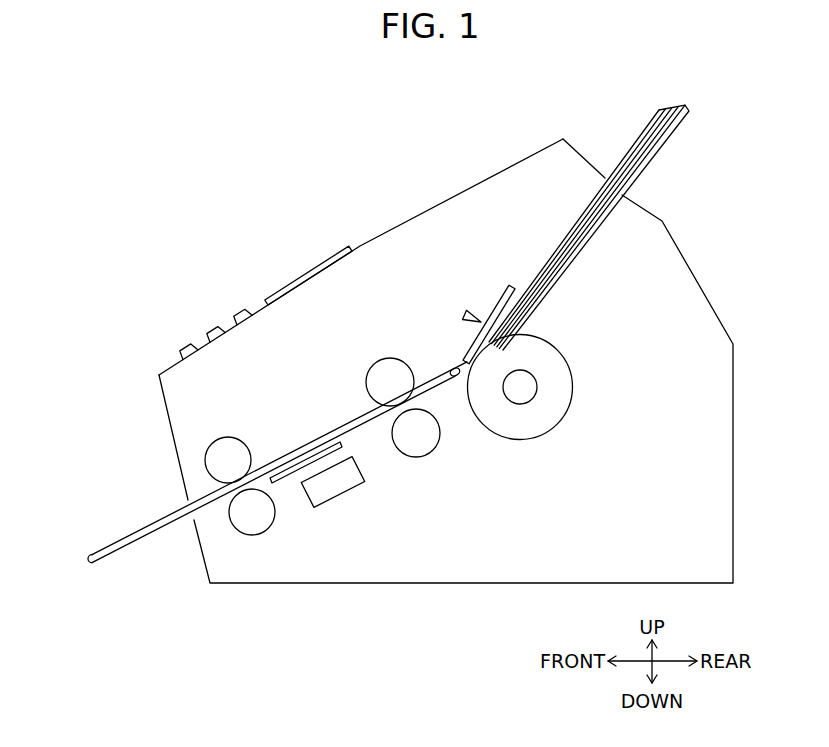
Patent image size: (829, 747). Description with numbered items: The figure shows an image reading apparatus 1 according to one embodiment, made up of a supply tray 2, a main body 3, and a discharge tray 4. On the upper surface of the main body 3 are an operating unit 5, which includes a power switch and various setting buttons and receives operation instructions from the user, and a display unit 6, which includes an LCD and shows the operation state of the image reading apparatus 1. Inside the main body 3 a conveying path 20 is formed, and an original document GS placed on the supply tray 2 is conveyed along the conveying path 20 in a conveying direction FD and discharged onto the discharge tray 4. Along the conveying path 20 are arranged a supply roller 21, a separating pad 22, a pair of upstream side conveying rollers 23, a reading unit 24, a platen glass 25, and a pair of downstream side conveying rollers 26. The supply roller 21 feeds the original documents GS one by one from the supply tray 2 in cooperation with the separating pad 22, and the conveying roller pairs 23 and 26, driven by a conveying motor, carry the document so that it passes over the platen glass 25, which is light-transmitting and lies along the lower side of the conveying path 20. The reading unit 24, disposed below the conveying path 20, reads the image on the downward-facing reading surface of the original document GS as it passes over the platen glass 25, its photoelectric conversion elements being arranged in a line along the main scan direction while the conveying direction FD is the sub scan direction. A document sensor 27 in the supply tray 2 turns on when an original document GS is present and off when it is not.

The image reading apparatus 1 is at (194, 178).
The supply tray 2 is at (668, 138).
The main body 3 is at (383, 232).
The discharge tray 4 is at (144, 546).
The operating unit 5 is at (207, 312).
The display unit 6 is at (298, 272).
The conveying path 20 is at (452, 368).
The supply roller 21 is at (565, 392).
The separating pad 22 is at (502, 298).
The pair of upstream side conveying rollers 23 is at (398, 382).
The reading unit 24 is at (332, 490).
The platen glass 25 is at (284, 480).
The pair of downstream side conveying rollers 26 is at (213, 462).
The document sensor 27 is at (464, 315).
The original document GS is at (638, 144).
The conveying direction FD is at (358, 440).